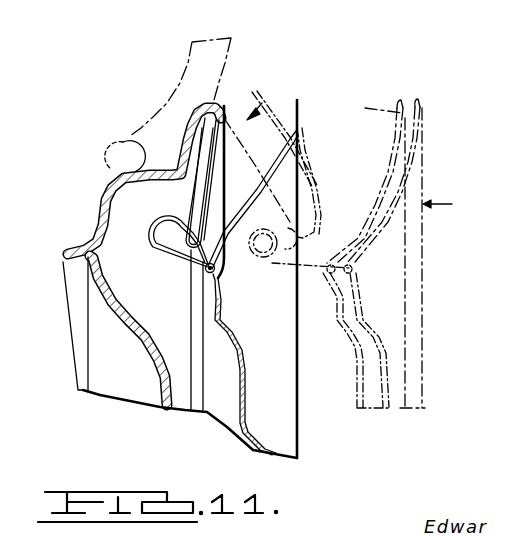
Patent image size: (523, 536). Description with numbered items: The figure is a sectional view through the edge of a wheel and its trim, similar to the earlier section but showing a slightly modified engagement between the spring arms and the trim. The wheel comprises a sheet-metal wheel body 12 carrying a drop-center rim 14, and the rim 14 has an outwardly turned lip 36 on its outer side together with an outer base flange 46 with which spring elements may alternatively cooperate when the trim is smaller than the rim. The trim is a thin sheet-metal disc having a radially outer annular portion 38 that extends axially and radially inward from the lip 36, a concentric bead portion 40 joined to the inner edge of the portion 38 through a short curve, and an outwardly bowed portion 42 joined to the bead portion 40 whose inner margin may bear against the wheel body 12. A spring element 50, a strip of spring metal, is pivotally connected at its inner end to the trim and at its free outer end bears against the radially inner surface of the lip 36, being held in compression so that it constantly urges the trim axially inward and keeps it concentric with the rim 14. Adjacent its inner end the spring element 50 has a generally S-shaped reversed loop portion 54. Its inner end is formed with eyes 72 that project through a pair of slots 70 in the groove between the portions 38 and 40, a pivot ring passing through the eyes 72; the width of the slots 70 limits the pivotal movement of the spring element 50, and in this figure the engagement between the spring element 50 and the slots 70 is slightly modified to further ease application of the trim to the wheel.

The wheel body 12 is at (123, 320).
The rim 14 is at (100, 196).
The lip 36 is at (219, 104).
The radially outer annular portion 38 is at (297, 117).
The annular bead portion 40 is at (222, 305).
The outwardly bowed annular portion 42 is at (350, 357).
The outer base flange 46 is at (123, 142).
The spring element 50 is at (205, 183).
The reversed loop portion 54 is at (153, 237).
The slots 70 is at (205, 261).
The eyes 72 is at (215, 270).